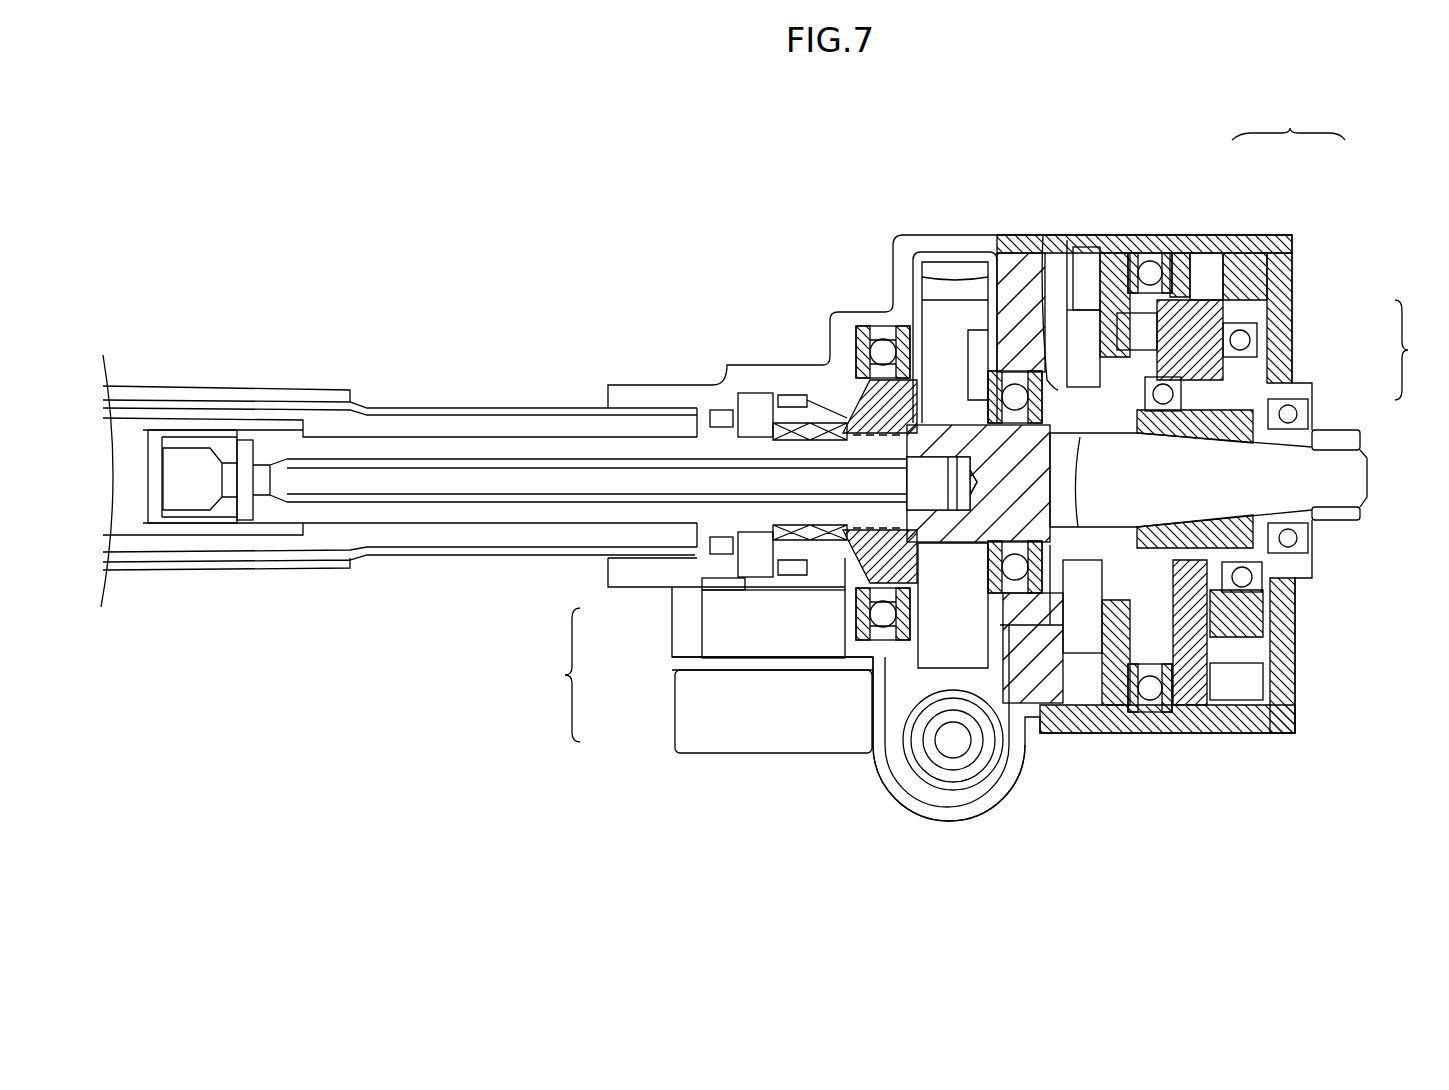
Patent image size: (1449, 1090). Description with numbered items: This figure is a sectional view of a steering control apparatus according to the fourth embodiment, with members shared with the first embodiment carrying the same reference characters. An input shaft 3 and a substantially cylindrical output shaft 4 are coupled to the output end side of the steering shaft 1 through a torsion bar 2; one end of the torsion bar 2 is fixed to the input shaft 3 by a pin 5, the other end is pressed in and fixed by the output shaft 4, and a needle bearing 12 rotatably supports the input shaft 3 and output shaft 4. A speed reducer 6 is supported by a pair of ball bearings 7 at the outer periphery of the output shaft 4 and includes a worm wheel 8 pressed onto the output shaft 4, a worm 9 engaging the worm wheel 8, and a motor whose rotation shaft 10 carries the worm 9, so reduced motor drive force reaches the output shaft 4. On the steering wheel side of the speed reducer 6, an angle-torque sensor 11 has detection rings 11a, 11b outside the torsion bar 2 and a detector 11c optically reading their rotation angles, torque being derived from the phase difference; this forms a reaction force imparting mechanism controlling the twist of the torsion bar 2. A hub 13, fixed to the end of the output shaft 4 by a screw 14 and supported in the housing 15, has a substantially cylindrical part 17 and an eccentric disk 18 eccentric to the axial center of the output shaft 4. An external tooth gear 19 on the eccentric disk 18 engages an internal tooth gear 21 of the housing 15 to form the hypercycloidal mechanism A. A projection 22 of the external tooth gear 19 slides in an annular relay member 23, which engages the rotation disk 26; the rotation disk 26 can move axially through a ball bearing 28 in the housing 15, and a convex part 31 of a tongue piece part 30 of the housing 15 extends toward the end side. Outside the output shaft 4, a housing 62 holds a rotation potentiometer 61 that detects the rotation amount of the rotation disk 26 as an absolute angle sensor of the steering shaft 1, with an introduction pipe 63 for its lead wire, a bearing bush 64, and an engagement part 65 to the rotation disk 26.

The steering shaft 1 is at (130, 435).
The torsion bar 2 is at (505, 480).
The input shaft 3 is at (195, 505).
The output shaft 4 is at (863, 413).
The pin 5 is at (265, 440).
The speed reducer 6 is at (935, 837).
The ball bearings 7 is at (872, 335).
The worm wheel 8 is at (957, 248).
The worm 9 is at (965, 767).
The rotation shaft 10 is at (940, 740).
The angle-torque sensor 11 is at (698, 675).
The detection ring 11a is at (733, 567).
The detection ring 11b is at (770, 580).
The detector 11c is at (693, 703).
The needle bearing 12 is at (780, 427).
The hub 13 is at (1421, 350).
The screw 14 is at (1343, 520).
The housing 15 is at (1285, 270).
The substantially cylindrical part 17 is at (1240, 365).
The eccentric disk 18 is at (1280, 355).
The external tooth gear 19 is at (1240, 300).
The internal tooth gear 21 is at (1225, 262).
The projection 22 is at (1210, 680).
The relay member 23 is at (1197, 700).
The rotation disk 26 is at (1170, 290).
The ball bearing 28 is at (1120, 300).
The tongue piece part 30 is at (1110, 270).
The convex part 31 is at (1130, 707).
The rotation potentiometer 61 is at (1081, 676).
The housing 62 is at (1077, 337).
The introduction pipe 63 is at (1058, 262).
The bearing bush 64 is at (1120, 330).
The engagement part 65 is at (1225, 330).
The hypercycloidal mechanism A is at (1288, 117).